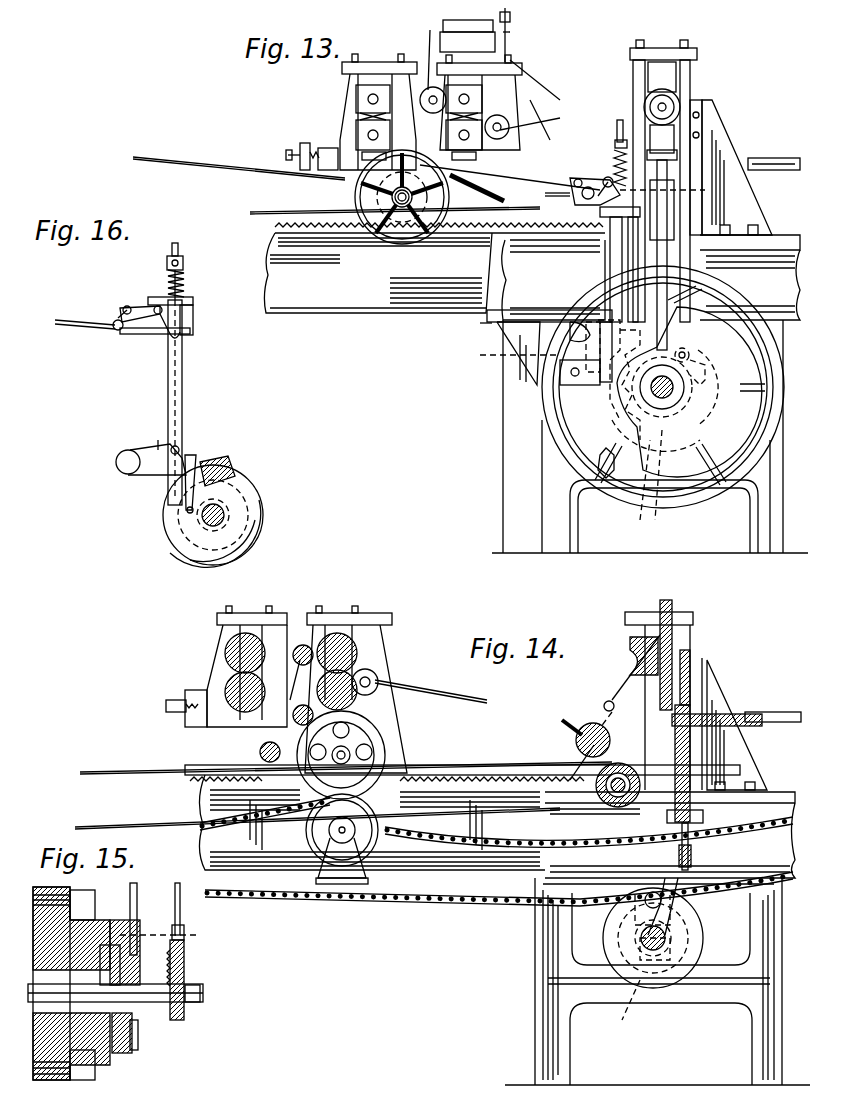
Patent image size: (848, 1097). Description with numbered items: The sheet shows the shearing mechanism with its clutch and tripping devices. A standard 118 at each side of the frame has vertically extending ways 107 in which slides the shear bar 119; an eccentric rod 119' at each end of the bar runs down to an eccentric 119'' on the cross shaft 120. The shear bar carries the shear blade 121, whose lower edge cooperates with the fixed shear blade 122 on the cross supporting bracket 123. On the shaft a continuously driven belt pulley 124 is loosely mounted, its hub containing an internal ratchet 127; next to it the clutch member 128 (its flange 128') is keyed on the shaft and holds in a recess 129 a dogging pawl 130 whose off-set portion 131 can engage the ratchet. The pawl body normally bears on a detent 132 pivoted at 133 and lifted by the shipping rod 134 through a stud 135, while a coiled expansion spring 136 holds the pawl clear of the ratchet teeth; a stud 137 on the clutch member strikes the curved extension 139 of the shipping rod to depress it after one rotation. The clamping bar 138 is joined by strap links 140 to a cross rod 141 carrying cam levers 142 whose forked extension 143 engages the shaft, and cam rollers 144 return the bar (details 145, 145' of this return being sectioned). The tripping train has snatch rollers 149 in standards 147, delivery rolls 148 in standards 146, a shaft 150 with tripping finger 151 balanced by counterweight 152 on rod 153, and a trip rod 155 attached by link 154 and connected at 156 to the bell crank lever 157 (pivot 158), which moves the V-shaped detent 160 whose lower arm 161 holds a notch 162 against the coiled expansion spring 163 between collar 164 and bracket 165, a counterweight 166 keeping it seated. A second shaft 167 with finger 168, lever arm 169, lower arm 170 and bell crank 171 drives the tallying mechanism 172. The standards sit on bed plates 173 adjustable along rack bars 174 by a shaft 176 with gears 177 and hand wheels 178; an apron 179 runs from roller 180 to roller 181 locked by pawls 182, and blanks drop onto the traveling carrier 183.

In FIG. 13, the vertically extending ways 107 is at (666, 62).
In FIG. 14, the vertically extending ways 107 is at (672, 620).
In FIG. 13, the standard 118 is at (692, 68).
In FIG. 14, the standard 118 is at (693, 632).
In FIG. 14, the shear bar 119 is at (731, 655).
In FIG. 13, the eccentric rod 119' is at (738, 209).
In FIG. 15, the eccentric rod 119' is at (210, 917).
In FIG. 13, the eccentric 119'' is at (771, 285).
In FIG. 15, the eccentric 119'' is at (214, 955).
In FIG. 13, the cross shaft 120 is at (660, 385).
In FIG. 16, the cross shaft 120 is at (225, 512).
In FIG. 14, the cross shaft 120 is at (660, 948).
In FIG. 15, the cross shaft 120 is at (203, 998).
In FIG. 14, the shear blade 121 is at (705, 690).
In FIG. 14, the fixed shear blade 122 is at (735, 712).
In FIG. 14, the cross supporting bracket 123 is at (740, 740).
In FIG. 13, the belt pulley 124 is at (715, 505).
In FIG. 13, the internal gear or ratchet 127 is at (640, 425).
In FIG. 16, the clutch member 128 is at (233, 516).
In FIG. 15, the clutch member 128 is at (95, 983).
In FIG. 15, the drum flange 128' is at (175, 1033).
In FIG. 16, the recess 129 is at (188, 500).
In FIG. 13, the dogging pawl 130 is at (529, 364).
In FIG. 16, the dogging pawl 130 is at (195, 470).
In FIG. 15, the dogging pawl 130 is at (186, 968).
In FIG. 16, the off-set portion 131 is at (235, 490).
In FIG. 15, the off-set portion 131 is at (105, 948).
In FIG. 13, the detent 132 is at (598, 330).
In FIG. 16, the detent 132 is at (147, 400).
In FIG. 15, the detent 132 is at (176, 918).
In FIG. 13, the pivot 133 is at (580, 330).
In FIG. 16, the pivot 133 is at (120, 462).
In FIG. 13, the shipping rod 134 is at (610, 262).
In FIG. 16, the shipping rod 134 is at (168, 384).
In FIG. 15, the shipping rod 134 is at (151, 917).
In FIG. 13, the stud 135 is at (640, 330).
In FIG. 16, the stud 135 is at (172, 452).
In FIG. 15, the stud 135 is at (177, 935).
In FIG. 16, the coiled expansion spring 136 is at (230, 466).
In FIG. 13, the stud or projection 137 is at (703, 361).
In FIG. 14, the clamping bar 138 is at (692, 672).
In FIG. 13, the curved extension 139 is at (656, 510).
In FIG. 16, the curved extension 139 is at (210, 566).
In FIG. 15, the curved extension 139 is at (138, 1040).
In FIG. 13, the strap link 140 is at (700, 160).
In FIG. 14, the cross rod 141 is at (692, 855).
In FIG. 14, the cam lever 142 is at (665, 878).
In FIG. 14, the forked extension 143 is at (560, 955).
In FIG. 14, the cam rollers 144 is at (700, 925).
In FIG. 14, the pulley 145 is at (620, 1011).
In FIG. 14, the pulley pin 145' is at (679, 932).
In FIG. 13, the standards 146 is at (342, 100).
In FIG. 14, the standards 146 is at (207, 682).
In FIG. 13, the standards 147 is at (520, 70).
In FIG. 14, the standards 147 is at (360, 640).
In FIG. 14, the delivery rolls 148 is at (225, 655).
In FIG. 14, the snatch rollers 149 is at (358, 652).
In FIG. 13, the transversely extending shaft 150 is at (420, 95).
In FIG. 14, the transversely extending shaft 150 is at (365, 730).
In FIG. 14, the tripping finger 151 is at (357, 708).
In FIG. 13, the counterweight 152 is at (470, 215).
In FIG. 13, the rod 153 is at (480, 230).
In FIG. 13, the link or lug 154 is at (415, 210).
In FIG. 13, the trip rod 155 is at (239, 156).
In FIG. 16, the trip rod 155 is at (82, 312).
In FIG. 13, the connection 156 is at (564, 181).
In FIG. 16, the connection 156 is at (122, 332).
In FIG. 13, the bell crank lever 157 is at (577, 178).
In FIG. 16, the bell crank lever 157 is at (103, 314).
In FIG. 13, the pivot 158 is at (595, 172).
In FIG. 16, the pivot 158 is at (132, 302).
In FIG. 13, the V-shaped detent 160 is at (618, 160).
In FIG. 16, the V-shaped detent 160 is at (170, 290).
In FIG. 13, the lower arm 161 is at (730, 186).
In FIG. 16, the lower arm 161 is at (185, 316).
In FIG. 13, the notch 162 is at (608, 245).
In FIG. 16, the notch 162 is at (183, 340).
In FIG. 13, the coiled expansion spring 163 is at (622, 140).
In FIG. 16, the coiled expansion spring 163 is at (185, 285).
In FIG. 13, the collar 164 is at (622, 120).
In FIG. 16, the collar 164 is at (183, 260).
In FIG. 13, the bracket 165 is at (640, 167).
In FIG. 16, the bracket 165 is at (193, 301).
In FIG. 13, the counterweight 166 is at (590, 200).
In FIG. 13, the shaft 167 is at (418, 51).
In FIG. 14, the shaft 167 is at (296, 648).
In FIG. 14, the finger 168 is at (296, 600).
In FIG. 13, the lever arm 169 is at (545, 111).
In FIG. 13, the lower arm 170 is at (512, 52).
In FIG. 13, the bell crank 171 is at (508, 30).
In FIG. 13, the tallying mechanism 172 is at (467, 26).
In FIG. 13, the bed plates 173 is at (510, 232).
In FIG. 13, the rack bars 174 is at (275, 230).
In FIG. 14, the rack bars 174 is at (188, 780).
In FIG. 13, the shaft 176 is at (400, 205).
In FIG. 14, the shaft 176 is at (260, 752).
In FIG. 13, the gear 177 is at (380, 225).
In FIG. 13, the hand wheels 178 is at (400, 214).
In FIG. 13, the apron 179 is at (510, 156).
In FIG. 14, the apron 179 is at (582, 728).
In FIG. 13, the roller 180 is at (508, 124).
In FIG. 14, the roller 180 is at (378, 682).
In FIG. 14, the roller 181 is at (578, 746).
In FIG. 14, the pawls 182 is at (612, 707).
In FIG. 13, the traveling carrier 183 is at (374, 205).
In FIG. 14, the traveling carrier 183 is at (333, 758).